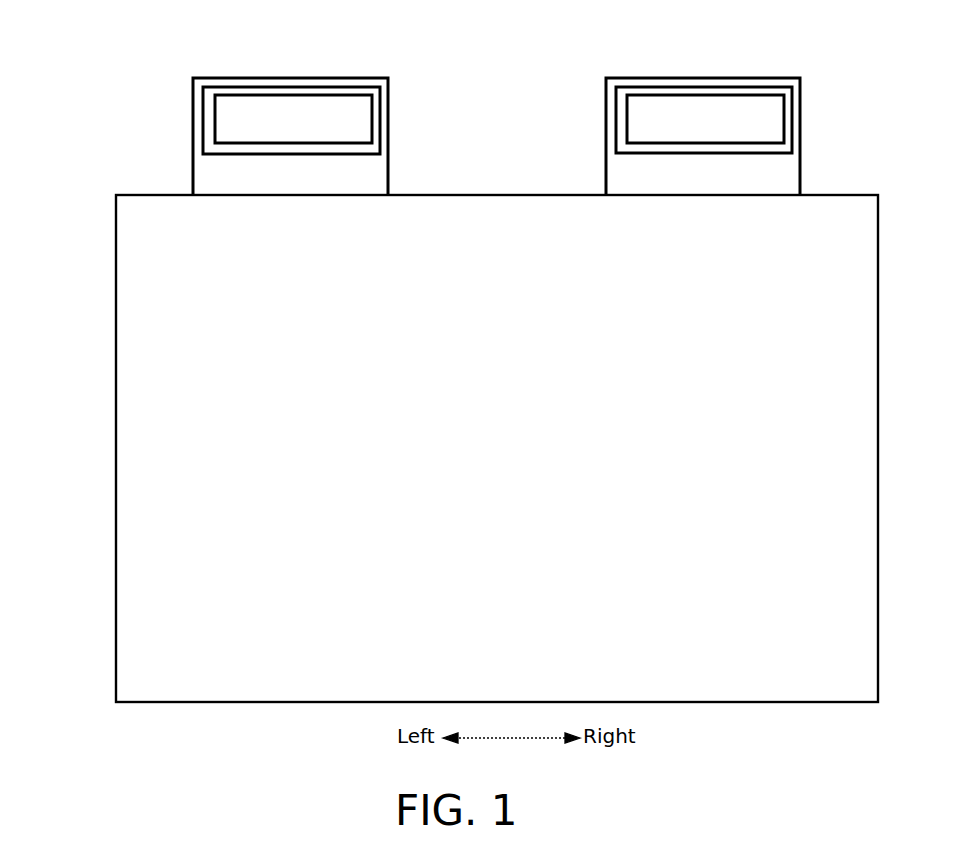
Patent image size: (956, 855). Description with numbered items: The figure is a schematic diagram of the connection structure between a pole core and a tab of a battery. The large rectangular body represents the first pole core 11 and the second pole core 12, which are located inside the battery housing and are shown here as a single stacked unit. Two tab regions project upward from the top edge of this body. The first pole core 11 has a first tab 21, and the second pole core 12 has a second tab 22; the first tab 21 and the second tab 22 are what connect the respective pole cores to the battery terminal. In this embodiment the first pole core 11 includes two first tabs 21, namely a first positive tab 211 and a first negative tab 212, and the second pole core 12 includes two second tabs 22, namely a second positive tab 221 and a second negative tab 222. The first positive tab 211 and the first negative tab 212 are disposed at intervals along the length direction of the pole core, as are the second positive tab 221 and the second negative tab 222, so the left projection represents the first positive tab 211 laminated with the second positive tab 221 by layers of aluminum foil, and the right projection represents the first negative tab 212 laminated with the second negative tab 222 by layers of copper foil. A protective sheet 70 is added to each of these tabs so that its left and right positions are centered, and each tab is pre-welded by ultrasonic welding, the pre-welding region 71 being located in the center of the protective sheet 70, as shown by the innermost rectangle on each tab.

The first pole core 11 is at (446, 448).
The second pole core 12 is at (140, 430).
The first tab 21 is at (496, 101).
The second tab 22 is at (572, 48).
The first positive tab 211 is at (334, 122).
The second positive tab 221 is at (330, 78).
The first negative tab 212 is at (658, 122).
The second negative tab 222 is at (667, 78).
The protective sheet 70 is at (208, 105).
The pre-welding region 71 is at (223, 143).